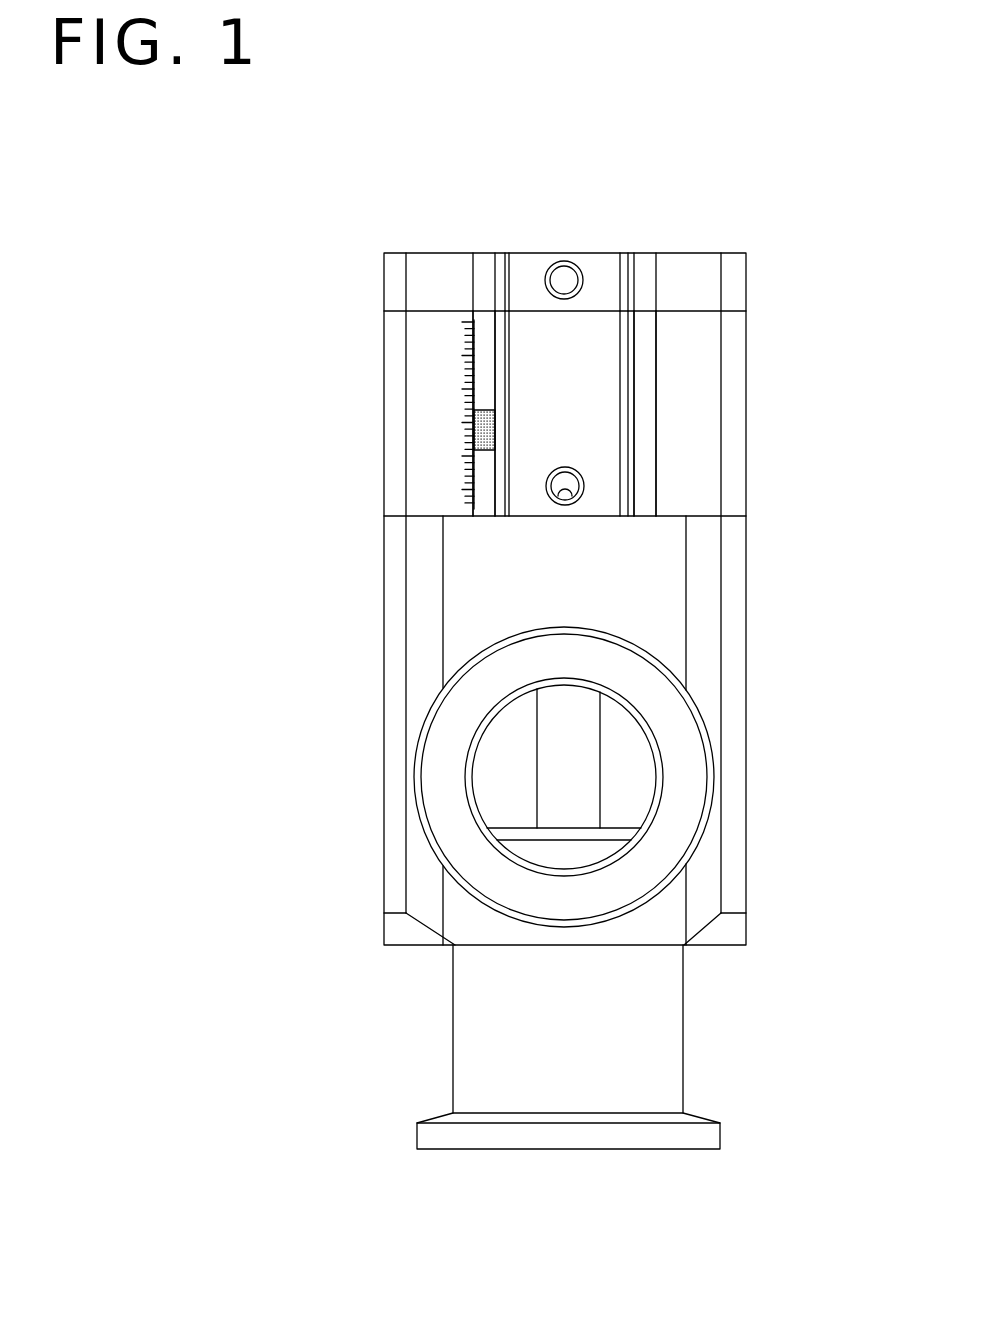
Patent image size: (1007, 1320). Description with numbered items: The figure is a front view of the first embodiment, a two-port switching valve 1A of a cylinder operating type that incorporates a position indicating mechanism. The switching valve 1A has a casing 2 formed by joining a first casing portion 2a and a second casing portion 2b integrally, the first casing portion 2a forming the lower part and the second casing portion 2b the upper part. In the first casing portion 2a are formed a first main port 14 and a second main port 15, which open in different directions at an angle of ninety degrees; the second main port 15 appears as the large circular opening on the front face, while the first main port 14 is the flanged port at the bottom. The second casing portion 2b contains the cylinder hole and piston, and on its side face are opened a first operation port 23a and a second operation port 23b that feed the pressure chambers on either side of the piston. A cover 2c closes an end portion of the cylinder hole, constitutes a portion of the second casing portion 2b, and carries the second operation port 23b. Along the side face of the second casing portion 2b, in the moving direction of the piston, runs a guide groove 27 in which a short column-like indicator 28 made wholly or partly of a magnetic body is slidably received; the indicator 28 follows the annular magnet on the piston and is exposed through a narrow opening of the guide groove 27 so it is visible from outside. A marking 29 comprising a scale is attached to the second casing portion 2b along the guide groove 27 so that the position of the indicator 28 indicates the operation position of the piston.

The switching valve 1A is at (768, 208).
The casing 2 is at (381, 536).
The first casing portion 2a is at (395, 650).
The second casing portion 2b is at (390, 412).
The cover 2c is at (735, 278).
The first main port 14 is at (570, 1137).
The second main port 15 is at (632, 746).
The first operation port 23a is at (578, 473).
The second operation port 23b is at (564, 262).
The guide groove 27 is at (485, 372).
The indicator 28 is at (470, 433).
The marking 29 is at (463, 344).